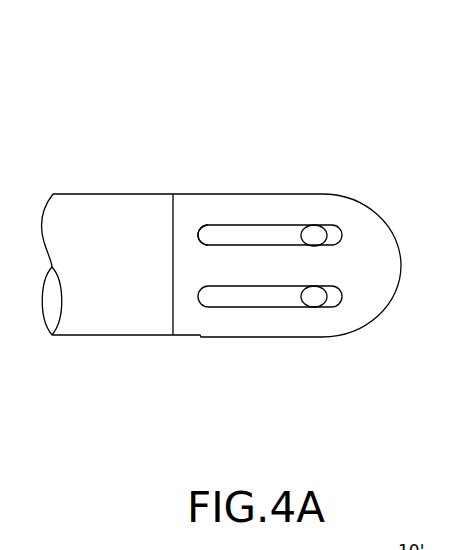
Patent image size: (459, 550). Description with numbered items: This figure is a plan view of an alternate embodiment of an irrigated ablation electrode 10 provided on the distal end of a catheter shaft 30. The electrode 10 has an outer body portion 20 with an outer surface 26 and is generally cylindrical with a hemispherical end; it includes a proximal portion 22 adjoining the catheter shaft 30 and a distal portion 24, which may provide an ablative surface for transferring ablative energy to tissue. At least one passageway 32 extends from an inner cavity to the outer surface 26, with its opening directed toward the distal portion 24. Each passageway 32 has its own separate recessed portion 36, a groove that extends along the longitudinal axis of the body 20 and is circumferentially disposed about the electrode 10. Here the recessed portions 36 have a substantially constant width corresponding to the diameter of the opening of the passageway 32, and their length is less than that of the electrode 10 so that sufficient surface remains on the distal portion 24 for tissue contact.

The ablation electrode 10 is at (258, 97).
The outer body portion 20 is at (281, 387).
The proximal portion 22 is at (192, 362).
The distal portion 24 is at (378, 344).
The outer surface 26 is at (268, 213).
The catheter shaft 30 is at (88, 337).
The passageway 32 is at (313, 238).
The recessed portion 36 is at (210, 237).